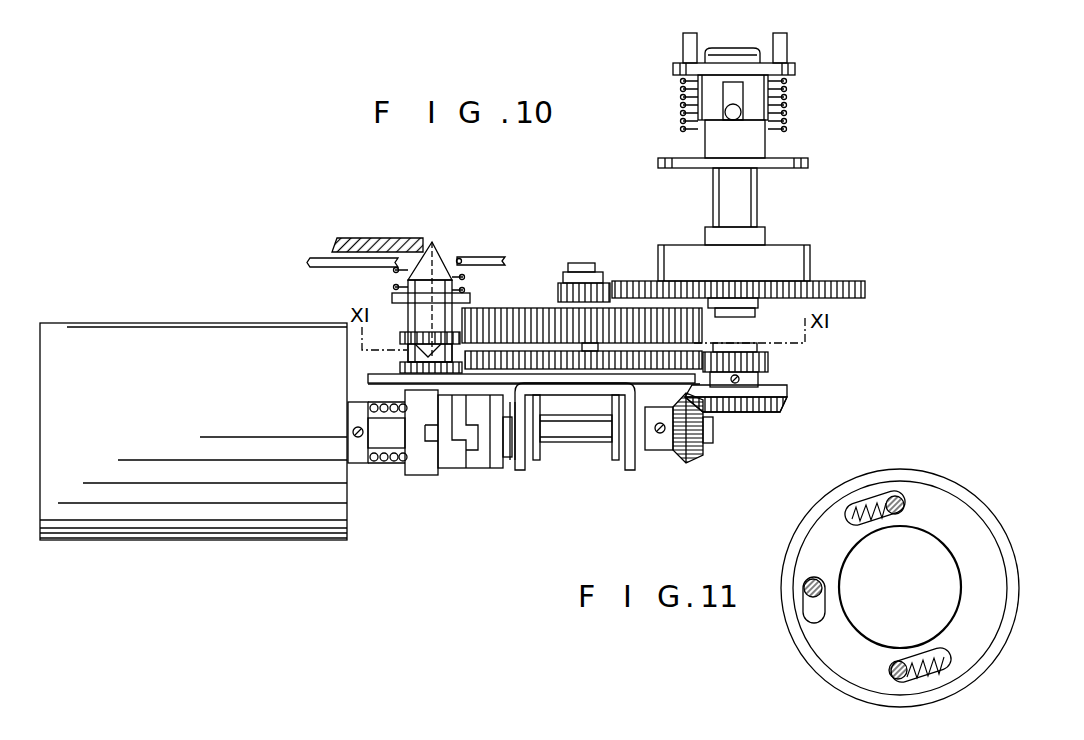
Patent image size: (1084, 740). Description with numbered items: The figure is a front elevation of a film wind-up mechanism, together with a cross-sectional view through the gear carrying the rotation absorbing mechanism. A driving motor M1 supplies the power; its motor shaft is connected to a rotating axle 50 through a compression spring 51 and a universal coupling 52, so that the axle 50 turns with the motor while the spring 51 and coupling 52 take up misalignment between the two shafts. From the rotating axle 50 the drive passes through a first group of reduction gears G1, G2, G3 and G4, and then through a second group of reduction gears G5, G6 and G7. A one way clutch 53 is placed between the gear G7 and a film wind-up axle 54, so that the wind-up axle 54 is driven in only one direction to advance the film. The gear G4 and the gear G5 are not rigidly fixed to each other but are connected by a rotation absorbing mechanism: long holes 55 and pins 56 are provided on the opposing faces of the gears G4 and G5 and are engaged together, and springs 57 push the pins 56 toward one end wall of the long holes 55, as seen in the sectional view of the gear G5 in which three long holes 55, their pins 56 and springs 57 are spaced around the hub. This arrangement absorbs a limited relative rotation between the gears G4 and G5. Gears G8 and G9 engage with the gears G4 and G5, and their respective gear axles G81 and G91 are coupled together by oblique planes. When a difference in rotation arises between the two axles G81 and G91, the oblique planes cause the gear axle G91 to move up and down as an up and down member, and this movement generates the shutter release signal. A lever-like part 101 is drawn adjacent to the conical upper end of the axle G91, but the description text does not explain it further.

In FIG. 10, the driving motor M1 is at (173, 435).
In FIG. 10, the compression spring 51 is at (380, 464).
In FIG. 10, the universal coupling 52 is at (455, 470).
In FIG. 10, the rotating axle 50 is at (582, 432).
In FIG. 10, the reduction gear G1 is at (705, 452).
In FIG. 10, the reduction gear G2 is at (783, 402).
In FIG. 10, the reduction gear G3 is at (770, 361).
In FIG. 10, the reduction gear G4 is at (503, 358).
In FIG. 10, the reduction gear G5 is at (523, 318).
In FIG. 11, the reduction gear G5 is at (1019, 536).
In FIG. 10, the reduction gear G6 is at (553, 281).
In FIG. 10, the reduction gear G7 is at (868, 290).
In FIG. 10, the one way clutch 53 is at (808, 247).
In FIG. 10, the film wind-up axle 54 is at (745, 191).
In FIG. 10, the gear G9 is at (400, 334).
In FIG. 10, the gear axle G91 is at (431, 242).
In FIG. 10, the lever arm 101 is at (440, 252).
In FIG. 10, the gear axle G81 is at (400, 352).
In FIG. 10, the gear G8 is at (398, 366).
In FIG. 11, the long holes 55 is at (868, 503).
In FIG. 11, the pins 56 is at (897, 499).
In FIG. 11, the springs 57 is at (846, 514).